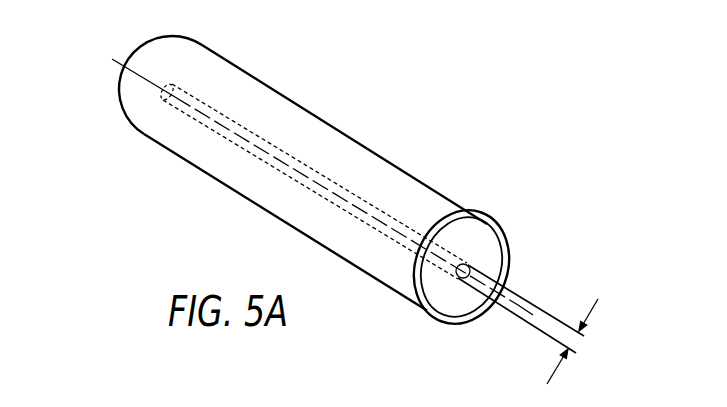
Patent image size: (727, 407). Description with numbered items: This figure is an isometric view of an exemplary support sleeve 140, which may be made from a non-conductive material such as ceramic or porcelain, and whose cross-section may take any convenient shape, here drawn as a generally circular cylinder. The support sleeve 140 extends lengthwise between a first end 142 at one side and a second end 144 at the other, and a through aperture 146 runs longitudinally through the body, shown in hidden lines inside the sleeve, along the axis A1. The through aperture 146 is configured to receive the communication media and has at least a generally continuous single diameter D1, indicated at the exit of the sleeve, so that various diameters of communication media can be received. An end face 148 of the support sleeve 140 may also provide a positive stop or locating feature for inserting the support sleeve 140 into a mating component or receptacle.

The support sleeve 140 is at (349, 99).
The first end 142 is at (142, 130).
The second end 144 is at (395, 285).
The through aperture 146 is at (163, 83).
The end face 148 is at (115, 81).
The axis A1 is at (524, 302).
The diameter D1 is at (582, 328).